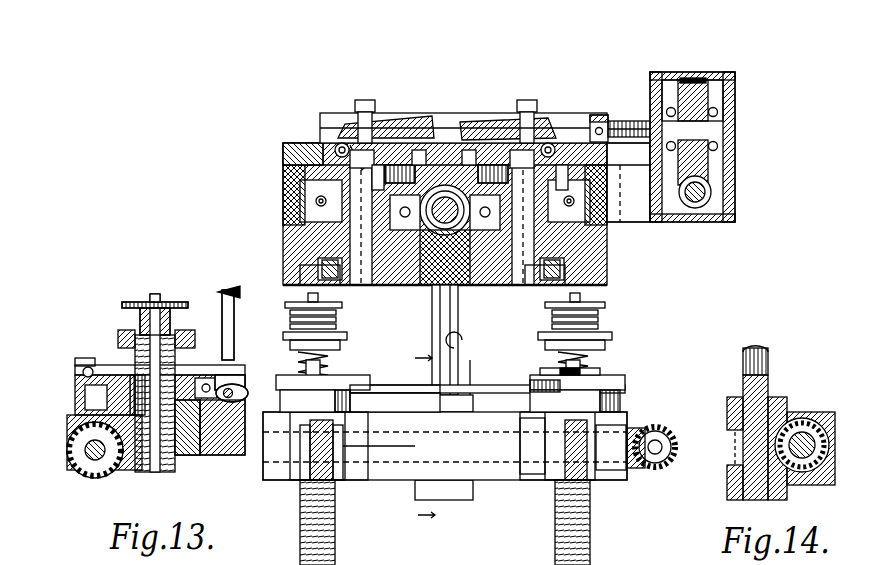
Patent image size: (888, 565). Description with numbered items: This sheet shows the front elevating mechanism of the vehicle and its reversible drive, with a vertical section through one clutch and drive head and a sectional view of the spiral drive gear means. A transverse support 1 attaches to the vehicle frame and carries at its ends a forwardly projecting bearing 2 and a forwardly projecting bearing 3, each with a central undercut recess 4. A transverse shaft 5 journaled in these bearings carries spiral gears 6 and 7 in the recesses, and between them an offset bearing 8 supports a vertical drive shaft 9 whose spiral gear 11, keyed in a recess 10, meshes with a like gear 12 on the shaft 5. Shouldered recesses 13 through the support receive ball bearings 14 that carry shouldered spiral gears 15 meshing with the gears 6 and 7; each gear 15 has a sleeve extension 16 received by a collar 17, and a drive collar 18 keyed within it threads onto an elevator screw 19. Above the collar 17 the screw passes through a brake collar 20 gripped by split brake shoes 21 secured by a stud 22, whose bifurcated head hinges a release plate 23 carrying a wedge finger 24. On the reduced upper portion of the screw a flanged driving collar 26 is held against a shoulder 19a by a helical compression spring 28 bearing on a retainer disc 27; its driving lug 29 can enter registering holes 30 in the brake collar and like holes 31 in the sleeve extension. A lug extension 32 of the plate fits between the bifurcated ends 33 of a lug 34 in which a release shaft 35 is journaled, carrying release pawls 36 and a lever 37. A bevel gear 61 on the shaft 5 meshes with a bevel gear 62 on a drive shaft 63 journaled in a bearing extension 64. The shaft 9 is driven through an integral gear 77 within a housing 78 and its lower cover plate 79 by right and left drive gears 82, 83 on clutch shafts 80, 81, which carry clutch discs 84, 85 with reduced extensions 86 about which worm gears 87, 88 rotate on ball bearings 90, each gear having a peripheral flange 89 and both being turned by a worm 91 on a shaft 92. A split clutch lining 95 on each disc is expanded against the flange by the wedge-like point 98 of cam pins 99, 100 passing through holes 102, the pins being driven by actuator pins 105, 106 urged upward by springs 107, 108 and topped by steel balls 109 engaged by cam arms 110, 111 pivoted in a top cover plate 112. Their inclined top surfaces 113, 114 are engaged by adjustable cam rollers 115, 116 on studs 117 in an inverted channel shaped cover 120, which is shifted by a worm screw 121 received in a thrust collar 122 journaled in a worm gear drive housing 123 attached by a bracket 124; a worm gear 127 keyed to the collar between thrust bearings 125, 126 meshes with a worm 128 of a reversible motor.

In FIG. 13, the transverse support 1 is at (380, 412).
In FIG. 13, the forwardly projecting bearing 2 is at (540, 470).
In FIG. 13, the forwardly projecting bearing 3 is at (600, 470).
In FIG. 13, the central undercut recess 4 is at (295, 480).
In FIG. 13, the transverse shaft 5 is at (390, 465).
In FIG. 14, the transverse shaft 5 is at (805, 460).
In FIG. 13, the spiral gear 6 is at (333, 483).
In FIG. 13, the spiral gear 7 is at (590, 480).
In FIG. 13, the offset bearing 8 is at (472, 440).
In FIG. 14, the offset bearing 8 is at (735, 485).
In FIG. 13, the vertical drive shaft 9 is at (458, 358).
In FIG. 14, the vertical drive shaft 9 is at (768, 355).
In FIG. 13, the recess 10 is at (475, 430).
In FIG. 13, the spiral gear 11 is at (415, 465).
In FIG. 14, the spiral gear 11 is at (737, 440).
In FIG. 14, the spiral gear 12 is at (800, 425).
In FIG. 13, the shouldered recess 13 is at (200, 420).
In FIG. 13, the ball bearing 14 is at (110, 492).
In FIG. 13, the shouldered spiral gear 15 is at (195, 440).
In FIG. 13, the sleeve extension 16 is at (90, 383).
In FIG. 13, the collar 17 is at (372, 385).
In FIG. 13, the drive collar 18 is at (142, 445).
In FIG. 13, the elevator screw 19 is at (335, 535).
In FIG. 13, the shoulder 19a is at (150, 300).
In FIG. 13, the brake collar 20 is at (345, 392).
In FIG. 13, the split brake shoe 21 is at (335, 392).
In FIG. 13, the stud 22 is at (600, 372).
In FIG. 13, the release plate 23 is at (330, 375).
In FIG. 13, the wedge finger 24 is at (600, 372).
In FIG. 13, the flanged driving collar 26 is at (350, 338).
In FIG. 13, the retainer disc 27 is at (342, 304).
In FIG. 13, the helical compression spring 28 is at (335, 320).
In FIG. 13, the driving lug 29 is at (135, 365).
In FIG. 13, the registering hole 30 is at (170, 300).
In FIG. 13, the hole 31 is at (178, 300).
In FIG. 13, the lug extension 32 is at (222, 380).
In FIG. 13, the bifurcated end 33 is at (235, 388).
In FIG. 13, the lug 34 is at (240, 395).
In FIG. 13, the release shaft 35 is at (475, 380).
In FIG. 13, the release pawl 36 is at (240, 420).
In FIG. 13, the lever 37 is at (232, 300).
In FIG. 13, the bevel gear 61 is at (660, 430).
In FIG. 13, the bevel gear 62 is at (672, 440).
In FIG. 13, the drive shaft 63 is at (678, 445).
In FIG. 13, the bearing extension 64 is at (638, 470).
In FIG. 13, the integral gear 77 is at (500, 285).
In FIG. 13, the housing 78 is at (600, 254).
In FIG. 13, the lower cover plate 79 is at (600, 270).
In FIG. 13, the right clutch shaft 80 is at (495, 360).
In FIG. 13, the left clutch shaft 81 is at (372, 285).
In FIG. 13, the right drive gear 82 is at (520, 285).
In FIG. 13, the left drive gear 83 is at (395, 285).
In FIG. 13, the right clutch disc 84 is at (600, 115).
In FIG. 13, the left clutch disc 85 is at (345, 160).
In FIG. 13, the reduced extension 86 is at (315, 210).
In FIG. 13, the worm gear 87 is at (600, 205).
In FIG. 13, the worm gear 88 is at (300, 200).
In FIG. 13, the peripheral flange 89 is at (283, 177).
In FIG. 13, the ball bearing 90 is at (300, 238).
In FIG. 13, the worm 91 is at (450, 190).
In FIG. 13, the shaft 92 is at (440, 200).
In FIG. 13, the clutch lining 95 is at (330, 150).
In FIG. 13, the wedge-like point 98 is at (608, 176).
In FIG. 13, the cam pin 99 is at (560, 150).
In FIG. 13, the cam pin 100 is at (400, 130).
In FIG. 13, the hole 102 is at (380, 135).
In FIG. 13, the actuator pin 105 is at (550, 145).
In FIG. 13, the actuator pin 106 is at (345, 150).
In FIG. 13, the helical compression spring 107 is at (525, 110).
In FIG. 13, the helical compression spring 108 is at (355, 145).
In FIG. 13, the steel ball 109 is at (367, 145).
In FIG. 13, the cam arm 110 is at (490, 130).
In FIG. 13, the cam arm 111 is at (418, 125).
In FIG. 13, the top cover plate 112 is at (283, 150).
In FIG. 13, the inclined top surface 113 is at (470, 135).
In FIG. 13, the inclined top surface 114 is at (390, 150).
In FIG. 13, the adjustable cam roller 115 is at (535, 140).
In FIG. 13, the adjustable cam roller 116 is at (362, 130).
In FIG. 13, the stud 117 is at (372, 120).
In FIG. 13, the inverted channel shaped cover 120 is at (615, 122).
In FIG. 13, the worm screw 121 is at (620, 125).
In FIG. 13, the worm screw thrust collar 122 is at (735, 185).
In FIG. 13, the worm gear drive housing 123 is at (735, 105).
In FIG. 13, the bracket 124 is at (640, 215).
In FIG. 13, the thrust bearing 125 is at (735, 95).
In FIG. 13, the thrust bearing 126 is at (672, 108).
In FIG. 13, the worm gear 127 is at (695, 80).
In FIG. 13, the worm 128 is at (715, 215).